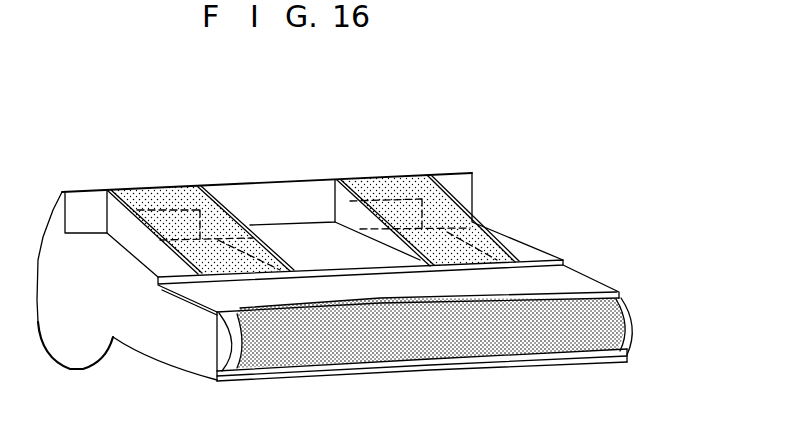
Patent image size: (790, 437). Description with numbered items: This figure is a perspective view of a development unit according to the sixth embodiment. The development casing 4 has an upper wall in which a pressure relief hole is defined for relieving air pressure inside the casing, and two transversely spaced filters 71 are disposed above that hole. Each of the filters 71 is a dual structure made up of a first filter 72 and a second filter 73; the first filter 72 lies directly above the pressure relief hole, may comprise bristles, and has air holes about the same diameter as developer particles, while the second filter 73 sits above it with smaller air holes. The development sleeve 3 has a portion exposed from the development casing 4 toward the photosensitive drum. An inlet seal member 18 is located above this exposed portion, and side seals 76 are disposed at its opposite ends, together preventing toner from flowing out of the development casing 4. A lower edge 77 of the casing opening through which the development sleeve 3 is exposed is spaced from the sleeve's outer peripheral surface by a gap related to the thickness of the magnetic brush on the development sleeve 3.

The development sleeve 3 is at (515, 337).
The development casing 4 is at (153, 340).
The inlet seal member 18 is at (356, 287).
The filters 71 is at (170, 191).
The first filter 72 is at (210, 222).
The second filter 73 is at (139, 190).
The side seals 76 is at (629, 322).
The lower edge 77 is at (443, 371).